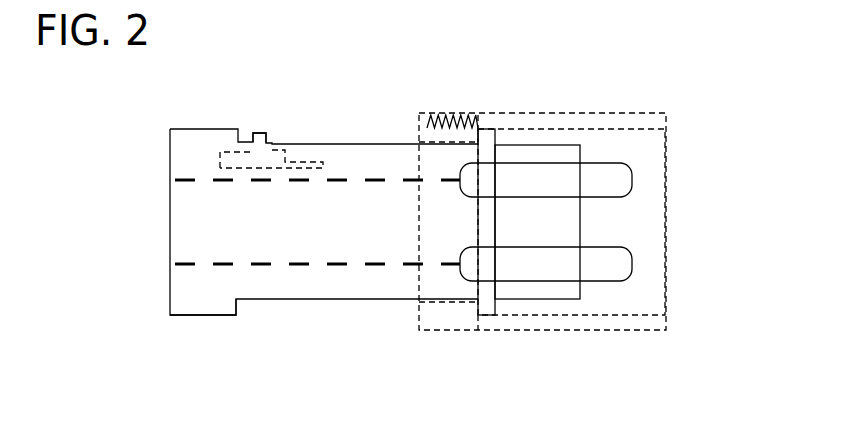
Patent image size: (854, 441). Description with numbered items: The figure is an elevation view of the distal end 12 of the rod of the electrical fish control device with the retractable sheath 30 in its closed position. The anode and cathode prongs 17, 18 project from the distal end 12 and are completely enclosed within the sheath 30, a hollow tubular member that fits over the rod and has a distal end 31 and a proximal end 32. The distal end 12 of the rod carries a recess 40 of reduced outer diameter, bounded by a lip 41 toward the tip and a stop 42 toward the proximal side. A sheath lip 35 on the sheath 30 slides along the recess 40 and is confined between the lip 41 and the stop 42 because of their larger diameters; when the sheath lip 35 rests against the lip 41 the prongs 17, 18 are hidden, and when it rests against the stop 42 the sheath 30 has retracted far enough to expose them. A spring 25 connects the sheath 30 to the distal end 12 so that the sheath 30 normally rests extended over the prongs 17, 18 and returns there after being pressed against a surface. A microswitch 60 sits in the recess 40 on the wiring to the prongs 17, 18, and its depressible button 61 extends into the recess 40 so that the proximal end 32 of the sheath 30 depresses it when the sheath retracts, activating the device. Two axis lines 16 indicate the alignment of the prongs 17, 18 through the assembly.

The distal end of the rod 12 is at (500, 302).
The axes 16 is at (200, 267).
The anode prong 17 is at (632, 178).
The cathode prong 18 is at (632, 263).
The spring 25 is at (433, 117).
The retractable sheath 30 is at (530, 117).
The distal end of the sheath 31 is at (665, 120).
The proximal end of the sheath 32 is at (417, 313).
The sheath lip 35 is at (462, 318).
The recess 40 is at (365, 145).
The lip 41 is at (488, 305).
The stop 42 is at (250, 305).
The microswitch 60 is at (290, 150).
The depressible button 61 is at (267, 138).